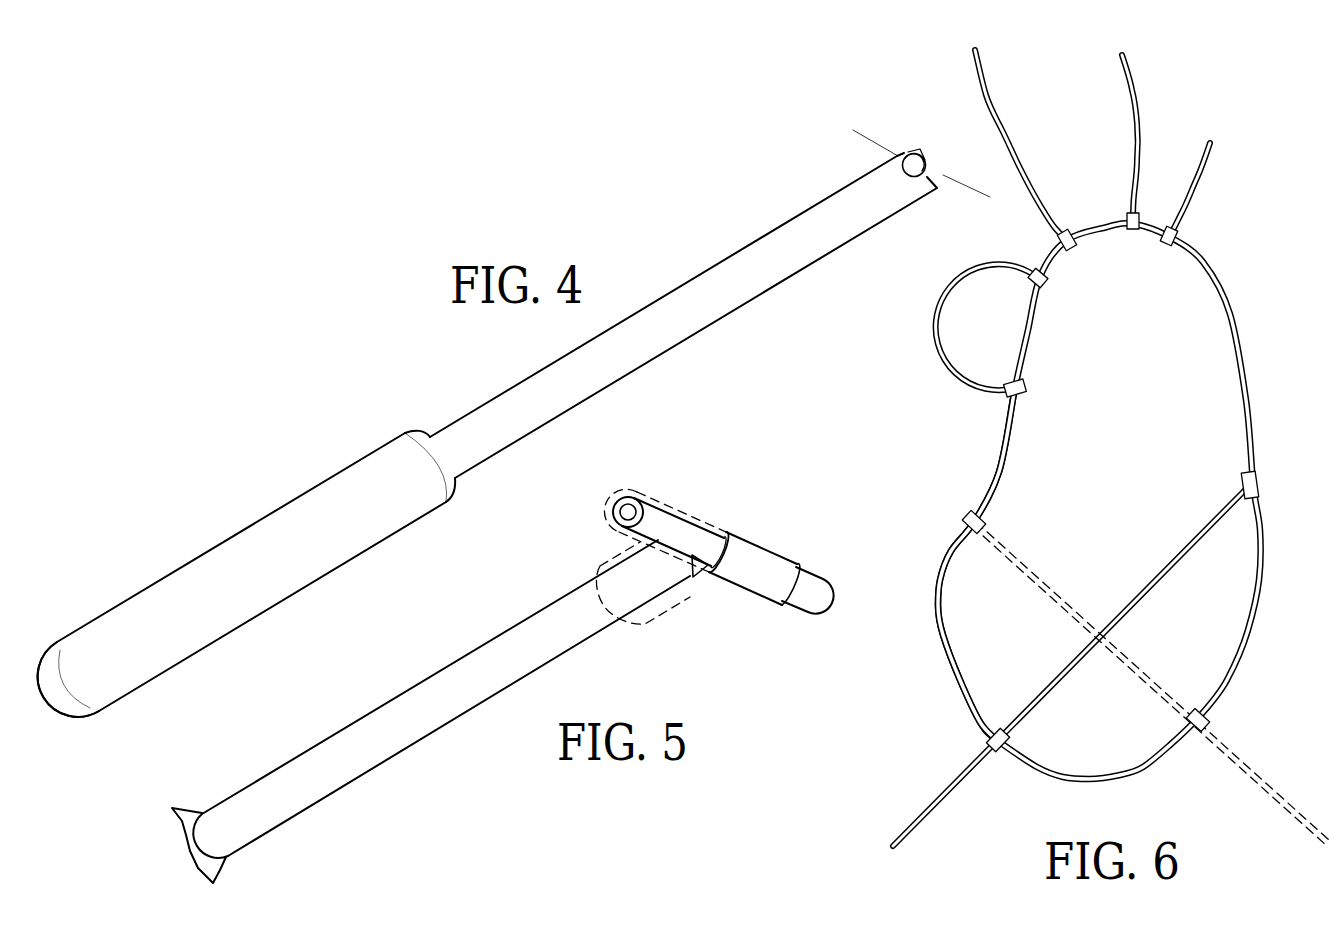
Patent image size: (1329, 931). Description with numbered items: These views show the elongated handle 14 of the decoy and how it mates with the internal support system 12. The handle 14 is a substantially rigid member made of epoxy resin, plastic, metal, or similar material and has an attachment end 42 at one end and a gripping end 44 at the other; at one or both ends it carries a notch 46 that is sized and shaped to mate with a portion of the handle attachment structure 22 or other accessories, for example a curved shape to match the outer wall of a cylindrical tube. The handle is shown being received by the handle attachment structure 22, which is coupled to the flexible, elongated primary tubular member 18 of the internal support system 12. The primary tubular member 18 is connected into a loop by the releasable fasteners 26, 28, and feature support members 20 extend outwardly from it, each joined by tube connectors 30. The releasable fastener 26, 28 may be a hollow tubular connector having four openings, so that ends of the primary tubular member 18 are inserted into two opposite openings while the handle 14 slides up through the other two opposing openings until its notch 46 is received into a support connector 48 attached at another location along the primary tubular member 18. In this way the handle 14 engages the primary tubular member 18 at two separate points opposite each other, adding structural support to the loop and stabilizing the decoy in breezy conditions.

In FIG. 6, the internal support system 12 is at (1231, 308).
In FIG. 4, the elongated handle 14 is at (360, 390).
In FIG. 5, the elongated handle 14 is at (412, 702).
In FIG. 6, the elongated handle 14 is at (946, 788).
In FIG. 5, the primary tubular member 18 is at (787, 576).
In FIG. 6, the primary tubular member 18 is at (1008, 468).
In FIG. 6, the feature support members 20 is at (1130, 108).
In FIG. 5, the handle attachment structure 22 is at (641, 498).
In FIG. 5, the releasable fastener 26 is at (712, 520).
In FIG. 6, the releasable fastener 26 is at (999, 754).
In FIG. 6, the releasable fastener 28 is at (1198, 736).
In FIG. 6, the tube connectors 30 is at (1165, 247).
In FIG. 4, the attachment end 42 is at (911, 152).
In FIG. 4, the gripping end 44 is at (88, 640).
In FIG. 5, the gripping end 44 is at (183, 813).
In FIG. 4, the notch 46 is at (897, 160).
In FIG. 5, the notch 46 is at (691, 575).
In FIG. 6, the support connector 48 is at (964, 520).